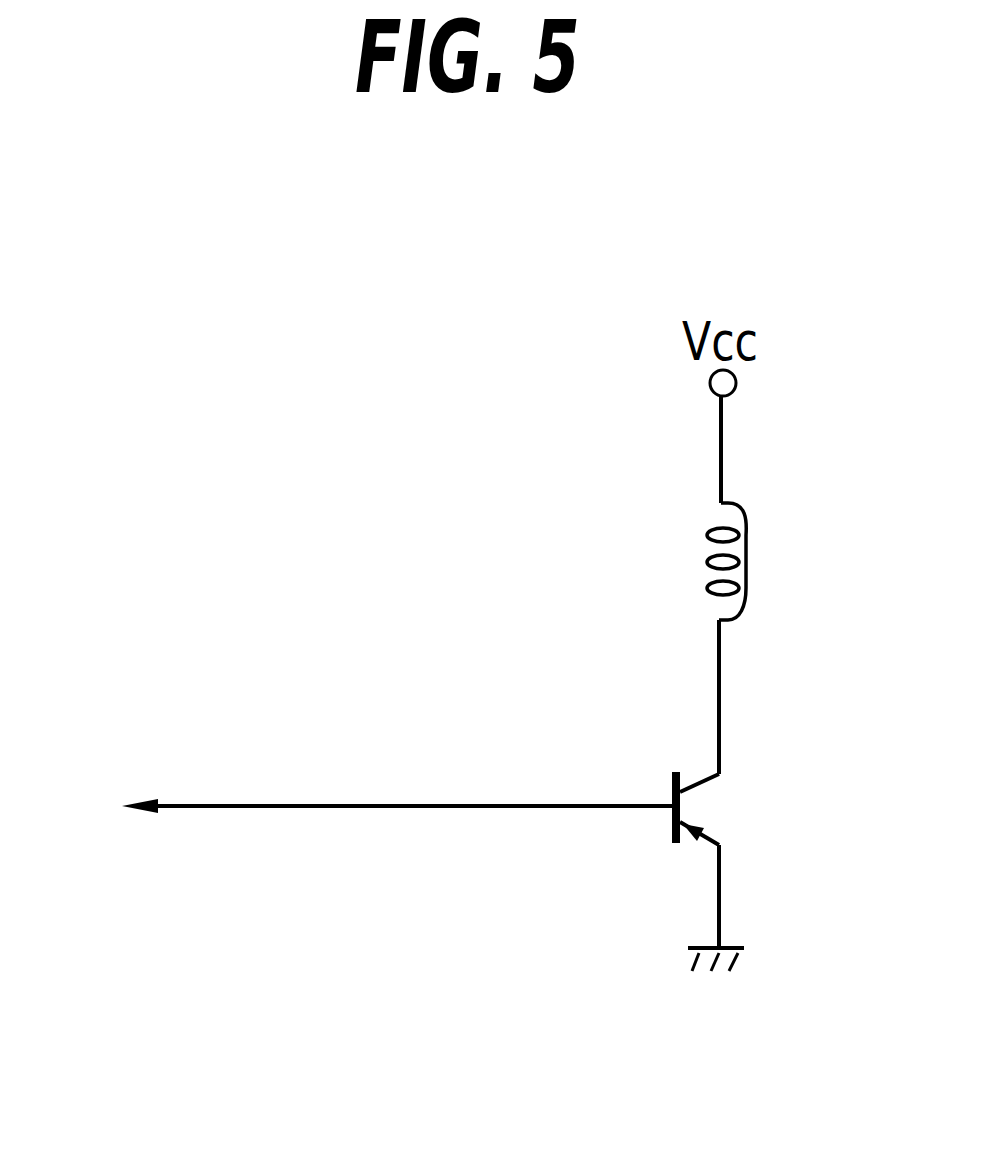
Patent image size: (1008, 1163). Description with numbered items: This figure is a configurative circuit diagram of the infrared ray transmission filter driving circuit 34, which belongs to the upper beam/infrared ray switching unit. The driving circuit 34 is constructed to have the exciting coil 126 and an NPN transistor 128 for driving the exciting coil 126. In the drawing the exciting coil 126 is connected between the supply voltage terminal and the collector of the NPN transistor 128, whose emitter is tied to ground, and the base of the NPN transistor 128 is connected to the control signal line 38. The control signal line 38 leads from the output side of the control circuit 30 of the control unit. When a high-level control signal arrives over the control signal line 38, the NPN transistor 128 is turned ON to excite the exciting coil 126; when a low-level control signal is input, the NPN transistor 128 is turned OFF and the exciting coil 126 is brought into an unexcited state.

The control circuit 30 is at (109, 804).
The infrared ray transmission filter driving circuit 34 is at (543, 682).
The control signal line 38 is at (395, 808).
The exciting coil 126 is at (746, 574).
The NPN transistor 128 is at (695, 808).